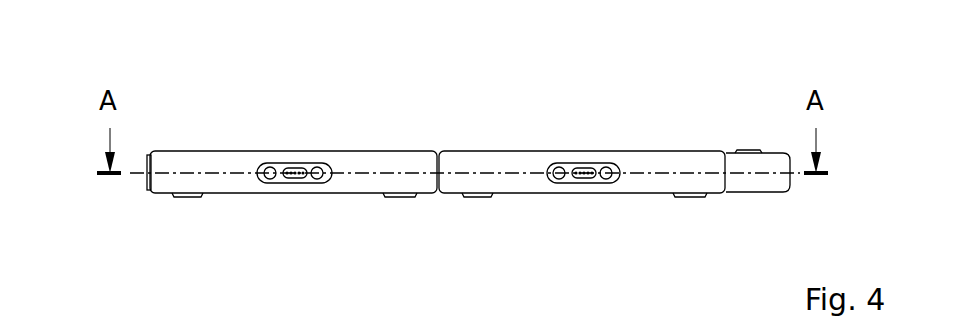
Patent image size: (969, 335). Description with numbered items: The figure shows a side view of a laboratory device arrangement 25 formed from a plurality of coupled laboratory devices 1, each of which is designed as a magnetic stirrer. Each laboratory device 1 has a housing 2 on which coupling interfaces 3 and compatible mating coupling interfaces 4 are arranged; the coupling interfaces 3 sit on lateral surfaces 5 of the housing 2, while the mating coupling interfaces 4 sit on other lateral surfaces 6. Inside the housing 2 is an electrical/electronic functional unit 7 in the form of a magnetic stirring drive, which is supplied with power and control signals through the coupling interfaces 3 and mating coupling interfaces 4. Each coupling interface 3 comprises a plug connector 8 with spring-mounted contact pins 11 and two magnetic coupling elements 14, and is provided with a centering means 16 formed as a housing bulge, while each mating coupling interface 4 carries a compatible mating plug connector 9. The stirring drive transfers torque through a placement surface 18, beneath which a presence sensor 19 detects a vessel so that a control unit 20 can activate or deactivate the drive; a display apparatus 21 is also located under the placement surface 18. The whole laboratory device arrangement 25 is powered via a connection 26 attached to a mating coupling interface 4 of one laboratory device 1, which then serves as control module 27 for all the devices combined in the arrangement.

The laboratory device 1 is at (285, 123).
The housing 2 is at (178, 152).
The coupling interface 3 is at (326, 164).
The mating coupling interface 4 is at (425, 139).
The lateral surface 5 is at (375, 167).
The lateral surface 6 is at (733, 190).
The functional unit 7 is at (376, 132).
The plug connector 8 is at (290, 165).
The mating plug connector 9 is at (764, 182).
The contact pin 11 is at (288, 179).
The magnetic coupling element 14 is at (270, 181).
The centering means 16 is at (152, 150).
The placement surface 18 is at (200, 152).
The presence sensor 19 is at (262, 130).
The control unit 20 is at (228, 135).
The display apparatus 21 is at (334, 124).
The laboratory device arrangement 25 is at (669, 57).
The connection 26 is at (770, 160).
The control module 27 is at (670, 190).